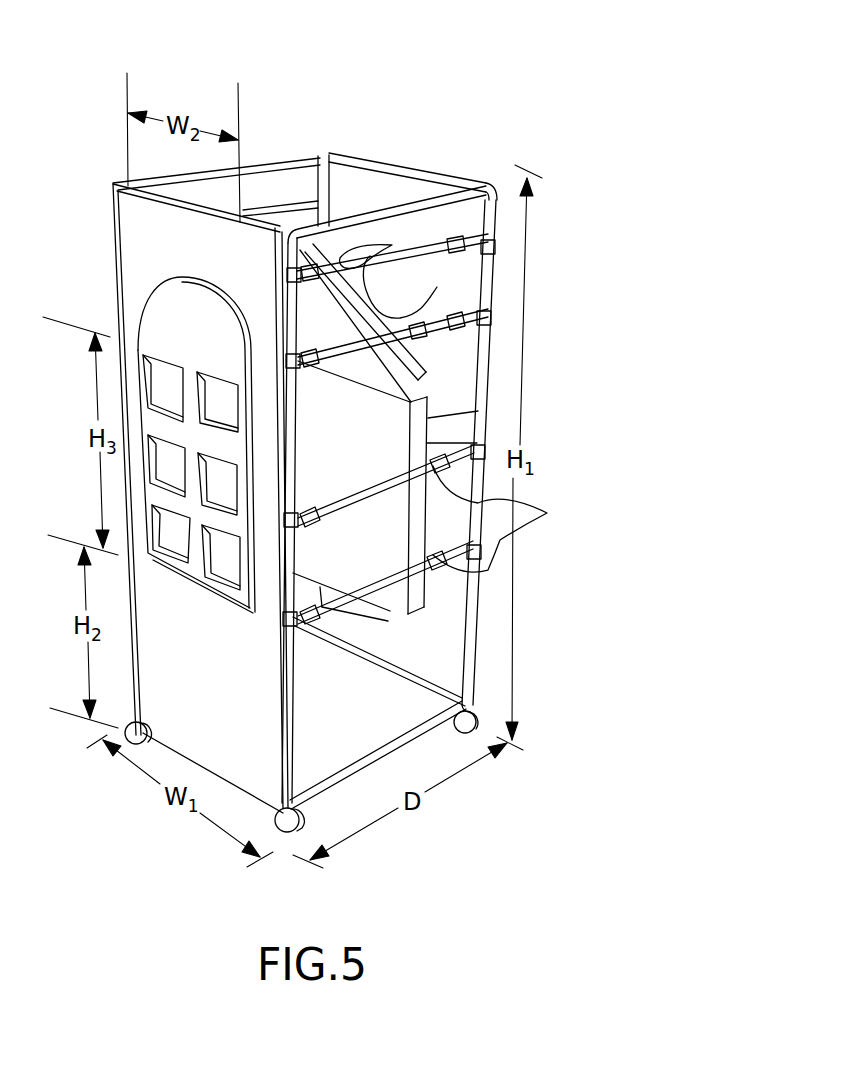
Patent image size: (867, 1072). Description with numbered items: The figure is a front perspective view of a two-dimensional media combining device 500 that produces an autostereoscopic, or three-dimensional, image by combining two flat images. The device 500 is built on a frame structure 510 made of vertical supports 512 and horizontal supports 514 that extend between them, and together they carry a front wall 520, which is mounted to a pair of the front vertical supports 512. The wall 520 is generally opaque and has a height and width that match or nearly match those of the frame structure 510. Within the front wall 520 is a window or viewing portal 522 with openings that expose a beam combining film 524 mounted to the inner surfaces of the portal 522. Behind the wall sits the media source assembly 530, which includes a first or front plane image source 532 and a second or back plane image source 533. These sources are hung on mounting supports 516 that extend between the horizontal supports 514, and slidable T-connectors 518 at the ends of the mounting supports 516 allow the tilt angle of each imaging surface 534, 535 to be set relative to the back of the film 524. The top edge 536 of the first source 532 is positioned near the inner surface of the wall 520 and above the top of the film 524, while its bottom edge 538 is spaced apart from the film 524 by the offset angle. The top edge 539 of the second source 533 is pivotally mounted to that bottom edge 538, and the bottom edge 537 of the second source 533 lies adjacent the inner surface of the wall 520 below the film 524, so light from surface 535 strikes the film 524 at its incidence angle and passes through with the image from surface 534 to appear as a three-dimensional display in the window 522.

The 2D media combining device 500 is at (495, 92).
The frame structure 510 is at (513, 677).
The vertical frame members or supports 512 is at (475, 614).
The horizontal frame members or supports 514 is at (547, 513).
The mounting supports 516 is at (368, 258).
The T-connectors 518 is at (417, 287).
The front wall 520 is at (210, 757).
The window or viewing portal 522 is at (178, 572).
The beam combining film 524 is at (163, 538).
The 2D media source assembly 530 is at (449, 350).
The first or front plane 2D image source 532 is at (426, 340).
The second or back plane 2D image source 533 is at (451, 517).
The imaging surface 534 is at (414, 378).
The imaging surface 535 is at (387, 603).
The top edge or end 536 is at (298, 242).
The bottom edge or end 537 is at (421, 607).
The bottom edge or end 538 is at (467, 358).
The top edge or end 539 is at (478, 411).